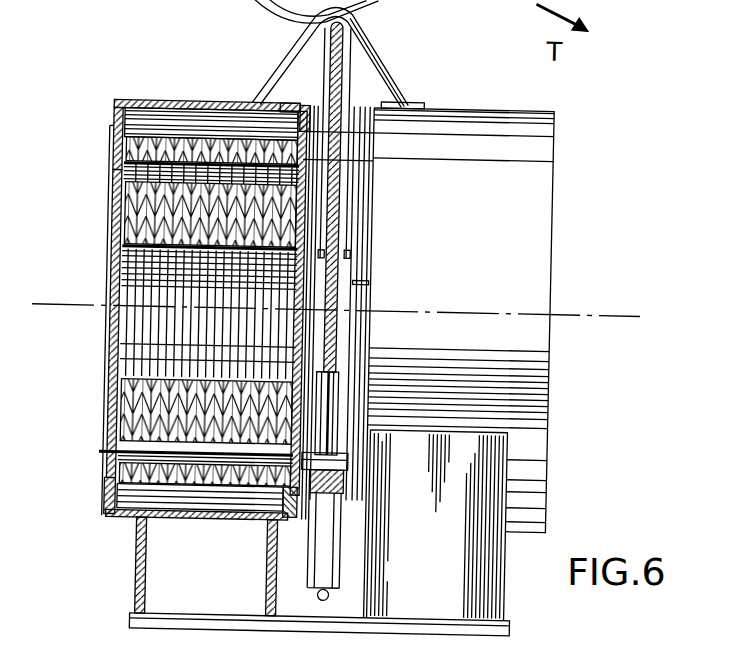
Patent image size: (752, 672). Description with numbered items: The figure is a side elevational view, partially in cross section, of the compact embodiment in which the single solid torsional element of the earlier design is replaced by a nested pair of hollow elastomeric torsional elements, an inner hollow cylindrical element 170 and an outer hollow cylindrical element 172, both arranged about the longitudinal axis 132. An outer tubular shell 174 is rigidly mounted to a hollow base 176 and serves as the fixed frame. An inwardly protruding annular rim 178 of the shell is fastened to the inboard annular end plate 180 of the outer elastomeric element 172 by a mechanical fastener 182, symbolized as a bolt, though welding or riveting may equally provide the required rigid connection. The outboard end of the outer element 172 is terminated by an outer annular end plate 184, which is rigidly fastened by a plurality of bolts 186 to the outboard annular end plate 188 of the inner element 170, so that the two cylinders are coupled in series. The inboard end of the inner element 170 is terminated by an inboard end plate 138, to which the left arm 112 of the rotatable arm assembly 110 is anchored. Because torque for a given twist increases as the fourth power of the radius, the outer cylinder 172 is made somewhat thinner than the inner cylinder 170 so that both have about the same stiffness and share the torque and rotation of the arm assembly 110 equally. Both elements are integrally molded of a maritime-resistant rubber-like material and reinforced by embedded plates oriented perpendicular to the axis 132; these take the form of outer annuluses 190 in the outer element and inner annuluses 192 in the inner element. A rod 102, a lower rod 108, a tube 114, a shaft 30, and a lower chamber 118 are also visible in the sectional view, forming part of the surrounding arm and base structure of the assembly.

The hollow base 176 is at (289, 12).
The arm assembly 110 is at (360, 102).
The rod 102 is at (350, 54).
The outer tubular shell 174 is at (134, 104).
The outer annular end plate 184 is at (118, 138).
The outer hollow cylindrical element 172 is at (121, 151).
The inner hollow cylindrical element 170 is at (124, 220).
The inwardly protruding annular rim 178 is at (282, 115).
The outer annuluses 190 is at (160, 140).
The outboard annular end plate 188 is at (122, 166).
The bolts 186 is at (117, 203).
The inboard end plate 138 is at (300, 249).
The left arm 112 is at (305, 294).
The inner annuluses 192 is at (233, 250).
The lower chamber 118 is at (306, 505).
The mechanical fastener 182 is at (300, 132).
The inboard annular end plate 180 is at (300, 160).
The tube 114 is at (366, 282).
The shaft 30 is at (345, 302).
The lower rod 108 is at (348, 545).
The longitudinal axis 132 is at (590, 306).